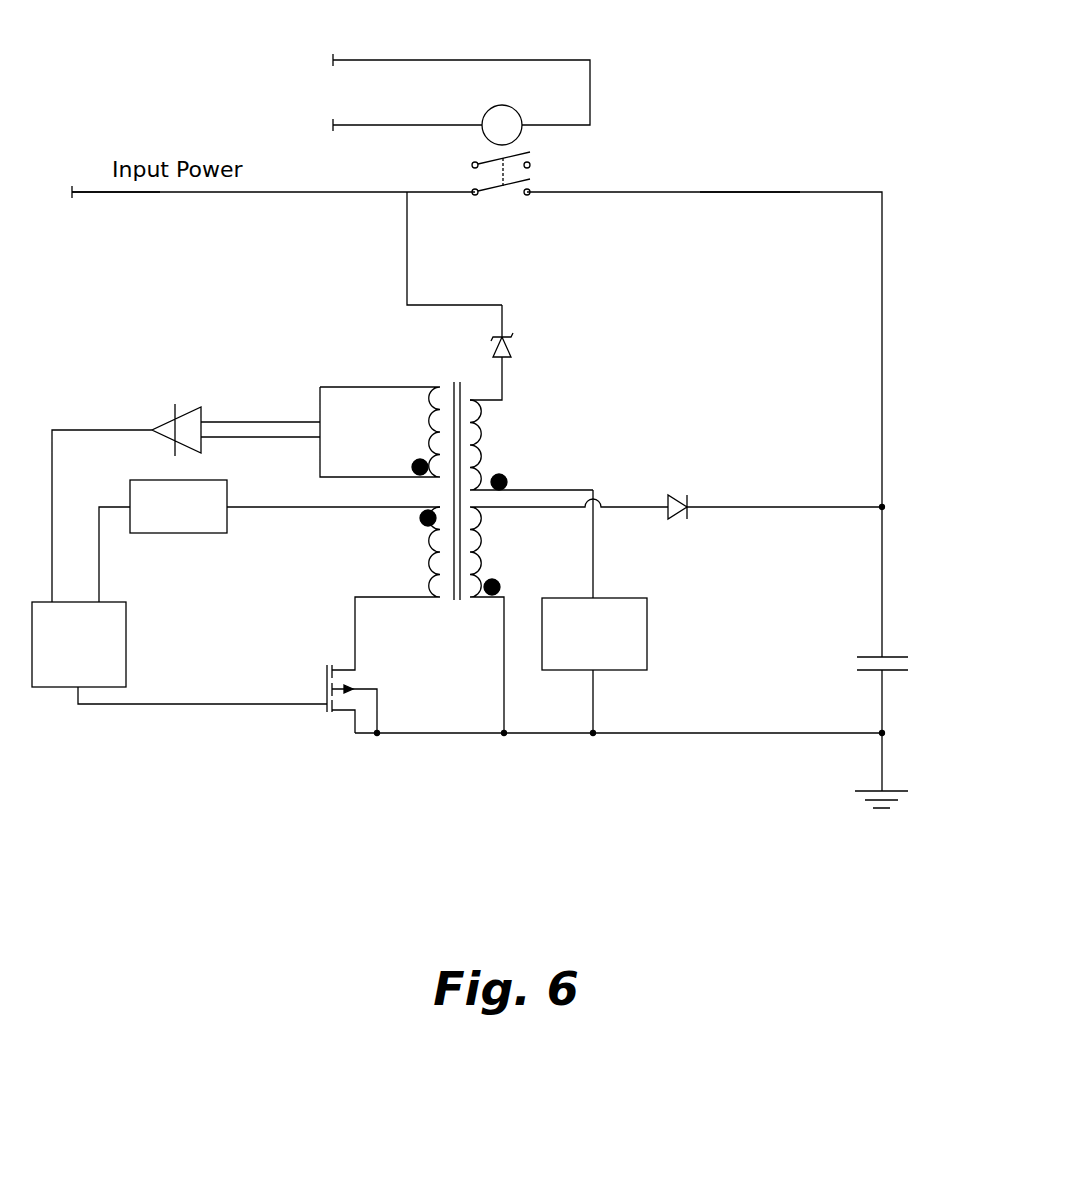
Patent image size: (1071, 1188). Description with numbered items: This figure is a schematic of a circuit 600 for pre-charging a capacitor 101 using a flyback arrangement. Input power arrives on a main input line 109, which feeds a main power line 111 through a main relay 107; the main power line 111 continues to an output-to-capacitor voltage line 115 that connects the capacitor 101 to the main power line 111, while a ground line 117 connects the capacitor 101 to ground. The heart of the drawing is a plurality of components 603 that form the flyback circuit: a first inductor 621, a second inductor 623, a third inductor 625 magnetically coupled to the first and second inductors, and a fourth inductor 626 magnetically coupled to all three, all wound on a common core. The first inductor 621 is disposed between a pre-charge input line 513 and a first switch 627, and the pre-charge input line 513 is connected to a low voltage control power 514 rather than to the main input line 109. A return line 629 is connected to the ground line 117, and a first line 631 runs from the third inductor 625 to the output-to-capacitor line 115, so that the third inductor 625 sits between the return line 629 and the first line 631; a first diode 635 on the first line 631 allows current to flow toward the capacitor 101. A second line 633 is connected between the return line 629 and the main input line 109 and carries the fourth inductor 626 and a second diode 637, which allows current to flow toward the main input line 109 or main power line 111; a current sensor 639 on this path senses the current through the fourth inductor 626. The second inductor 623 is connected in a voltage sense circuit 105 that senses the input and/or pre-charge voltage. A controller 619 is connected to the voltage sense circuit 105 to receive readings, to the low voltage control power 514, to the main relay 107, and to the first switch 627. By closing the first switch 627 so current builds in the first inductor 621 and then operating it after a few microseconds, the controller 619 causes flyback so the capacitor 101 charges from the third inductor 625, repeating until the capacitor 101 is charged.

The circuit 600 is at (477, 340).
The main relay 107 is at (498, 186).
The main input line 109 is at (165, 194).
The main power line 111 is at (740, 190).
The second line 633 is at (405, 215).
The plurality of components 603 is at (672, 344).
The second diode 637 is at (511, 346).
The second inductor 623 is at (432, 385).
The fourth inductor 626 is at (484, 398).
The voltage sense circuit 105 is at (270, 384).
The low voltage control power 514 is at (163, 541).
The pre-charge input line 513 is at (305, 512).
The controller 619 is at (179, 653).
The first inductor 621 is at (432, 600).
The third inductor 625 is at (478, 512).
The first diode 635 is at (676, 521).
The first line 631 is at (792, 505).
The current sense 639 is at (648, 633).
The output-to-capacitor voltage line 115 is at (885, 622).
The capacitor 101 is at (890, 672).
The ground line 117 is at (885, 790).
The first switch 627 is at (332, 712).
The return line 629 is at (713, 735).